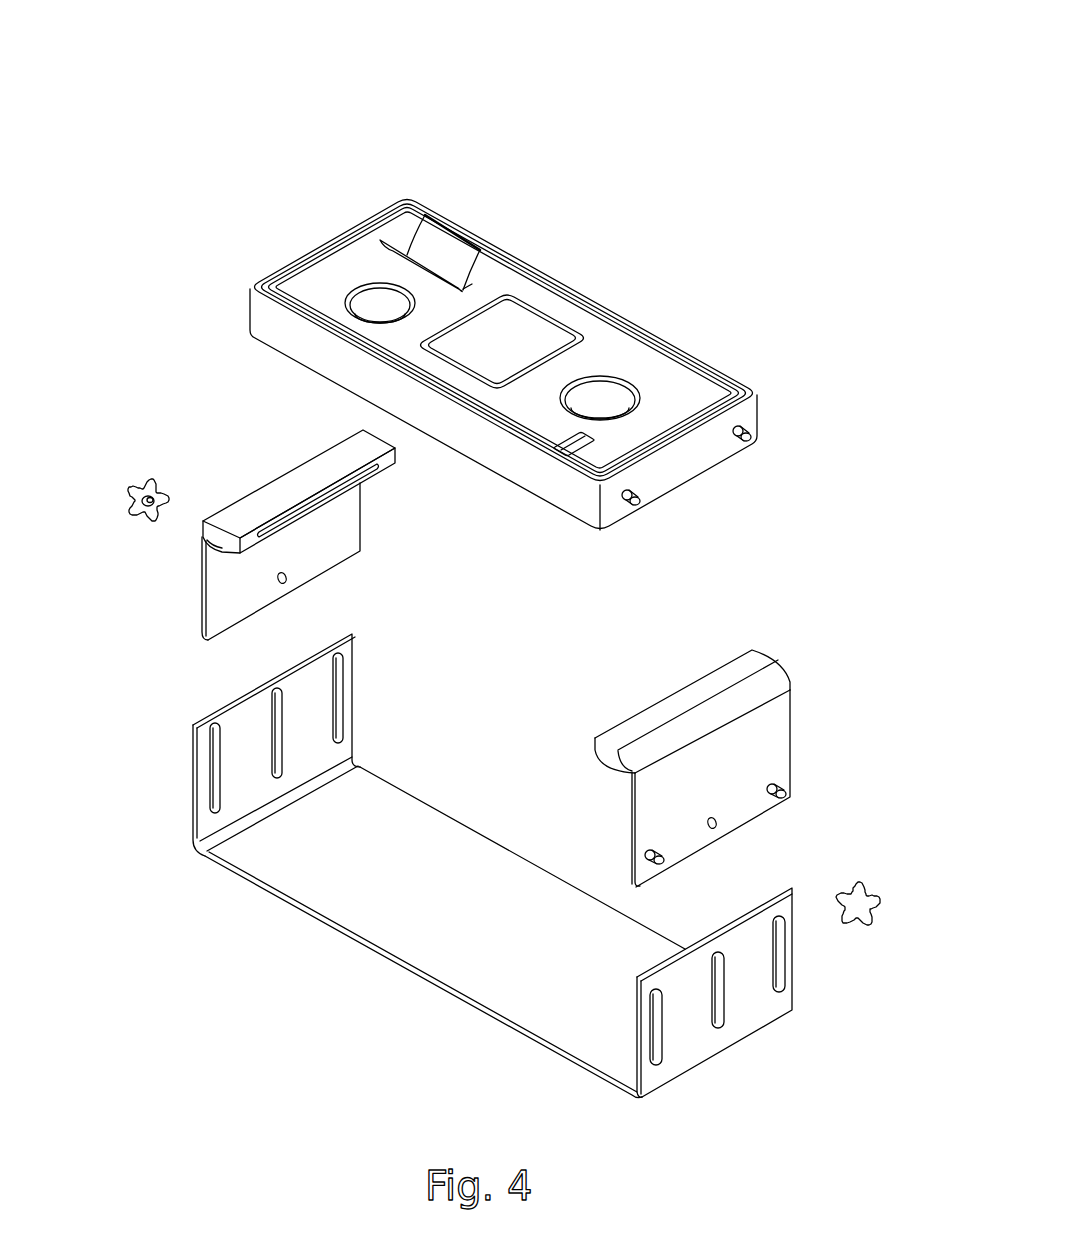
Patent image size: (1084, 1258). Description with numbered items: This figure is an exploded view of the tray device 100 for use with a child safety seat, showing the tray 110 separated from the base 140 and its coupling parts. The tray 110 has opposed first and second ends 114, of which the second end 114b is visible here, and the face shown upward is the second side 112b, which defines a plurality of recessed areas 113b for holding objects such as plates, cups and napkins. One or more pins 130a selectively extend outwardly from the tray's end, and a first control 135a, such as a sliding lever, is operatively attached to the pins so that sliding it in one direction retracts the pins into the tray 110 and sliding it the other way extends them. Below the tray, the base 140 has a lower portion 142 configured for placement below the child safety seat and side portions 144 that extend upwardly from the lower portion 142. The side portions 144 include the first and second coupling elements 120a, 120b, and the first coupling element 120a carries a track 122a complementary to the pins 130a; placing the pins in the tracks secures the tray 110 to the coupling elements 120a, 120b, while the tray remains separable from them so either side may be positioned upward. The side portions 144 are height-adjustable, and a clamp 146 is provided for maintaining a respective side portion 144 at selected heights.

The device 100 is at (837, 110).
The tray 110 is at (613, 270).
The second side 112b is at (513, 268).
The recessed areas 113b is at (526, 362).
The first and second ends 114 is at (697, 473).
The second end 114b is at (312, 247).
The first coupling element 120a is at (612, 723).
The second coupling element 120b is at (298, 491).
The track 122a is at (667, 700).
The pin 130a is at (748, 430).
The first control 135a is at (553, 450).
The base 140 is at (348, 957).
The lower portion 142 is at (252, 885).
The side portions 144 is at (197, 599).
The clamp 146 is at (135, 523).